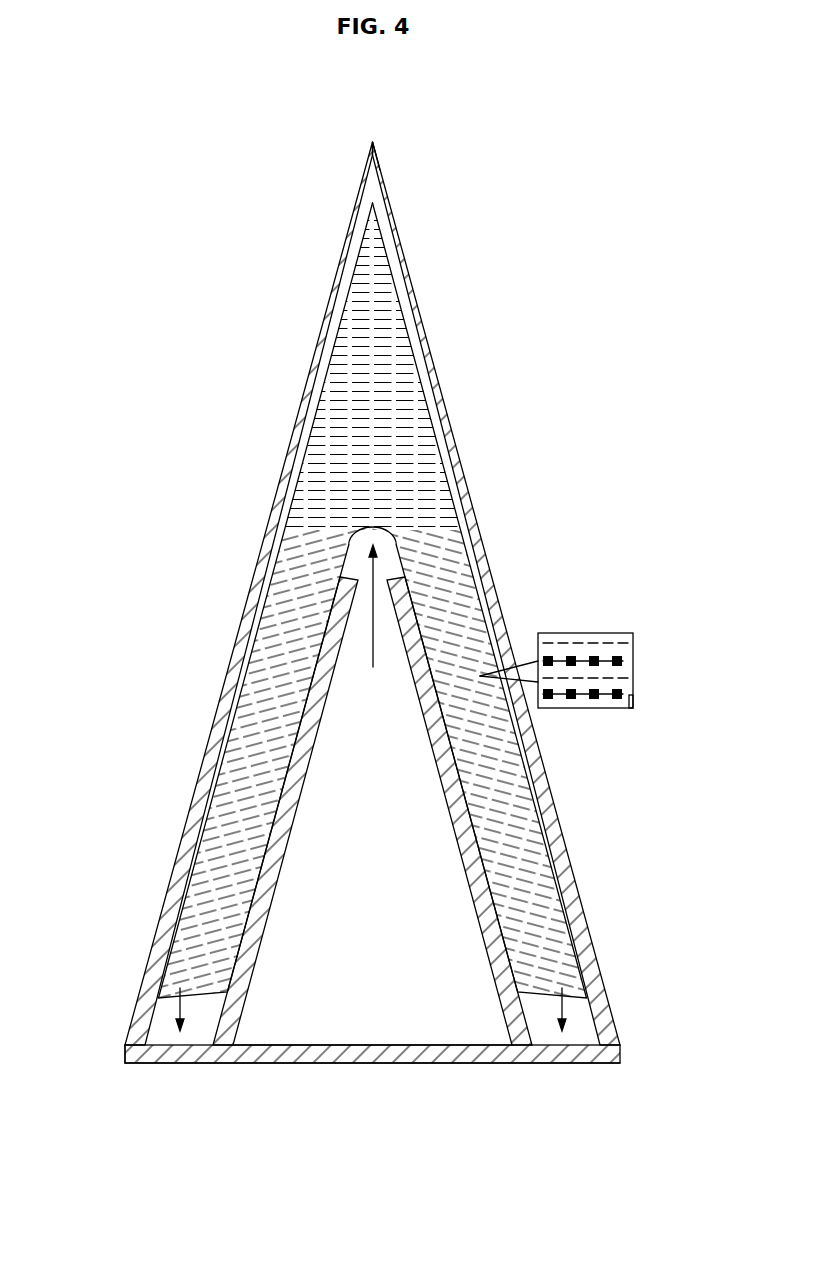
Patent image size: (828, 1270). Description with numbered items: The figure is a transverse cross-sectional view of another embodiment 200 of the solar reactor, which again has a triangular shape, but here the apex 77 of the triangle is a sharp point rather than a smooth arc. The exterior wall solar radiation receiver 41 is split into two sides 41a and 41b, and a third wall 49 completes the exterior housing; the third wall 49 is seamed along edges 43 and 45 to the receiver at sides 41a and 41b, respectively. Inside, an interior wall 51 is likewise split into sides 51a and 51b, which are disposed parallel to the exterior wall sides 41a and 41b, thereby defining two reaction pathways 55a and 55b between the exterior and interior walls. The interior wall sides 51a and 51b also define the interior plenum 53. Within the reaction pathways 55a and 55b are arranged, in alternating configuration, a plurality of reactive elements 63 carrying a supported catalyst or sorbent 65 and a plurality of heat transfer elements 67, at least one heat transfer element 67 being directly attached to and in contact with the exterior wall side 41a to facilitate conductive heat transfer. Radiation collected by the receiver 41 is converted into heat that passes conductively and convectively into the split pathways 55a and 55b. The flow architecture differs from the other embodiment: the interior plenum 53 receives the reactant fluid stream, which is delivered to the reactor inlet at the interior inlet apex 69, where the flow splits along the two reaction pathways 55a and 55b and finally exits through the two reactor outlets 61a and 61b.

The solar reactor embodiment 200 is at (548, 165).
The apex 77 is at (375, 143).
The exterior wall solar radiation receiver 41 is at (237, 678).
The exterior wall side 41a is at (250, 588).
The exterior wall side 41b is at (430, 347).
The interior wall 51 is at (272, 903).
The interior wall side 51a is at (311, 748).
The interior wall side 51b is at (450, 821).
The reaction pathway 55a is at (235, 818).
The reaction pathway 55b is at (545, 916).
The reactor outlet 61a is at (165, 1020).
The reactor outlet 61b is at (570, 1002).
The interior inlet apex 69 is at (386, 540).
The edge 45 is at (620, 1047).
The edge 43 is at (123, 1060).
The third wall 49 is at (392, 1055).
The interior plenum 53 is at (330, 1005).
The heat transfer element 67 is at (565, 643).
The catalyst or sorbent 65 is at (571, 699).
The reactive element 63 is at (631, 708).